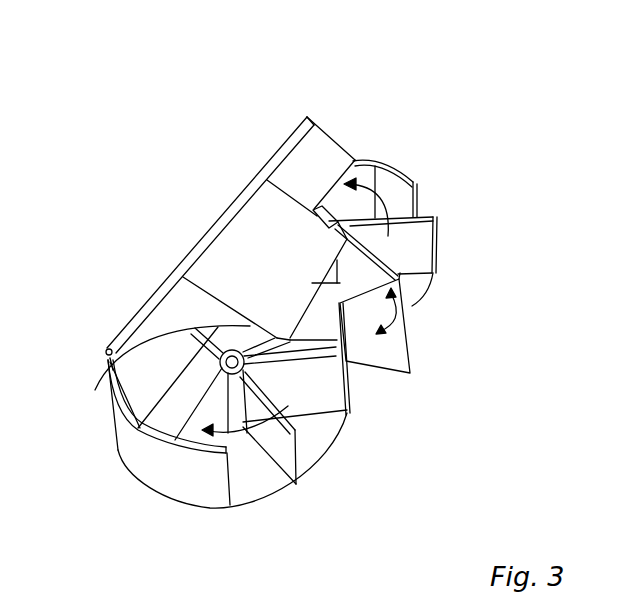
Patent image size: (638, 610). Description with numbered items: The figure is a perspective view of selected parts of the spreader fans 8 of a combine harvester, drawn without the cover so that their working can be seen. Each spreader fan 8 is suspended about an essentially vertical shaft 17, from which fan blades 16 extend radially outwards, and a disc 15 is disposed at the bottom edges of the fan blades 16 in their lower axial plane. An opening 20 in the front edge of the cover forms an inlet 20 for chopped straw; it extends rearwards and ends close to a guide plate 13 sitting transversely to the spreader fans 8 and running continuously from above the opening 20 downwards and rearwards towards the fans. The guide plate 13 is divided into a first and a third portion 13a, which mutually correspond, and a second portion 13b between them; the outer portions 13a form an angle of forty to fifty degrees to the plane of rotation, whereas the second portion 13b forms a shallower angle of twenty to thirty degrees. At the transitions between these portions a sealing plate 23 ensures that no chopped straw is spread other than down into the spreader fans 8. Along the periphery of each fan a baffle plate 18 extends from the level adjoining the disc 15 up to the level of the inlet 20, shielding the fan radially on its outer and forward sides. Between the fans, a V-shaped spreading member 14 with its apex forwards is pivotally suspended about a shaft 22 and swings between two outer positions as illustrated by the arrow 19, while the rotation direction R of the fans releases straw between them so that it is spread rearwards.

The guide plate 13 is at (329, 123).
The first and third portion of the guide plate 13a is at (296, 148).
The second portion of the guide plate 13b is at (213, 248).
The spreading member 14 is at (403, 345).
The disc 15 is at (340, 453).
The fan blades 16 is at (322, 385).
The shaft 17 is at (166, 343).
The baffle plate 18 is at (356, 162).
The arrow 19 is at (413, 307).
The opening 20 is at (110, 325).
The shaft 22 is at (345, 305).
The sealing plate 23 is at (125, 384).
The spreader fans 8 is at (432, 273).
The direction of rotation R is at (413, 183).